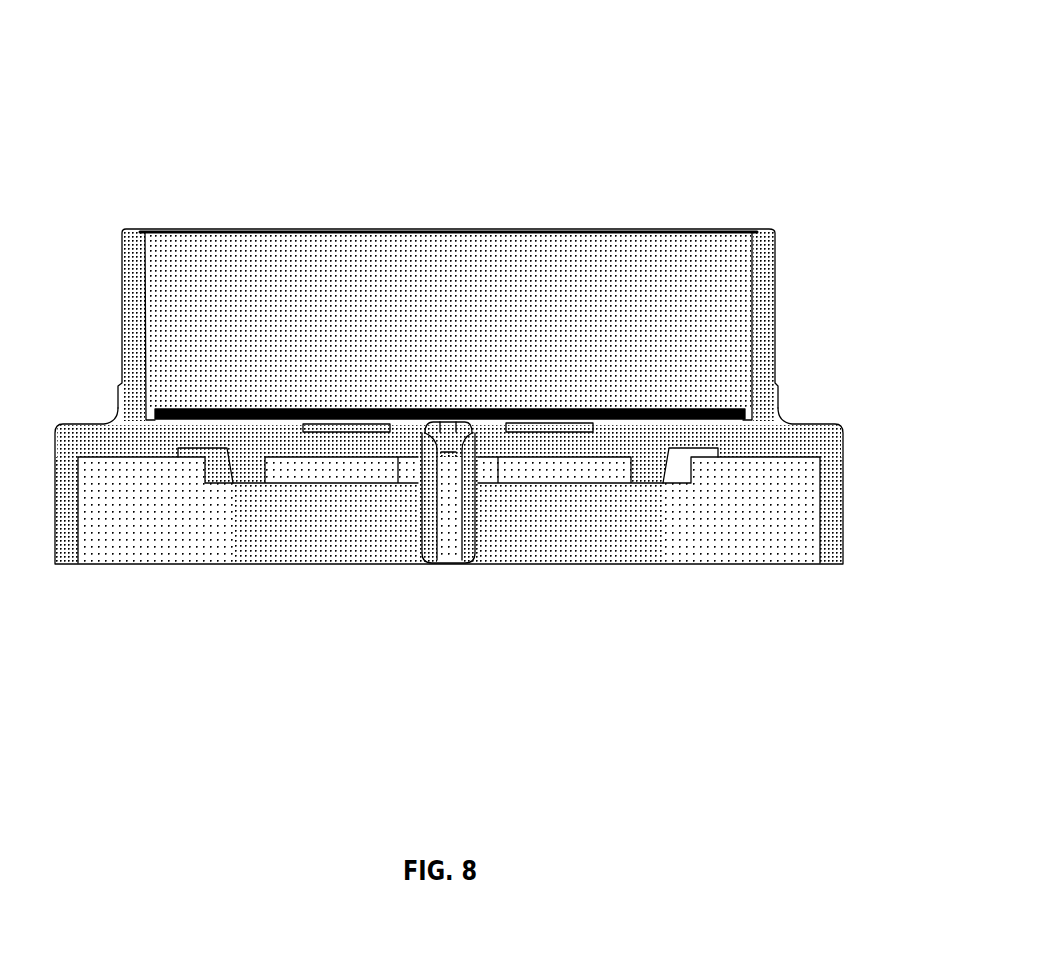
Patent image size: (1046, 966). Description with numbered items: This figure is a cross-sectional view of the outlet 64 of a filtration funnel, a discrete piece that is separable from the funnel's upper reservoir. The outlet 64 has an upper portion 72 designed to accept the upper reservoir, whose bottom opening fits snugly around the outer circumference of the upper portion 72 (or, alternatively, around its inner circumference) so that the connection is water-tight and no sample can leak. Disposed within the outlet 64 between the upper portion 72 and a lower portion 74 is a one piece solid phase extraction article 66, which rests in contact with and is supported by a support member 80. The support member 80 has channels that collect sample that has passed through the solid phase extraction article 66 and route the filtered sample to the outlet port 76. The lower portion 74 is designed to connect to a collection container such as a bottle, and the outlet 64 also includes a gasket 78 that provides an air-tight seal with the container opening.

The outlet 64 is at (563, 93).
The upper portion 72 is at (668, 230).
The one piece solid phase extraction article 66 is at (678, 413).
The lower portion 74 is at (838, 500).
The support member 80 is at (177, 430).
The gasket 78 is at (147, 460).
The outlet port 76 is at (418, 520).